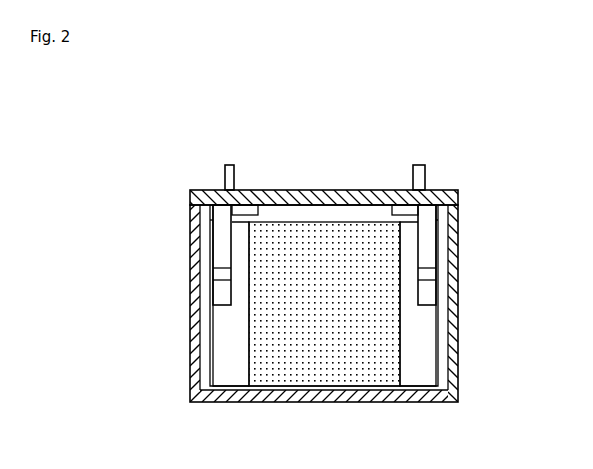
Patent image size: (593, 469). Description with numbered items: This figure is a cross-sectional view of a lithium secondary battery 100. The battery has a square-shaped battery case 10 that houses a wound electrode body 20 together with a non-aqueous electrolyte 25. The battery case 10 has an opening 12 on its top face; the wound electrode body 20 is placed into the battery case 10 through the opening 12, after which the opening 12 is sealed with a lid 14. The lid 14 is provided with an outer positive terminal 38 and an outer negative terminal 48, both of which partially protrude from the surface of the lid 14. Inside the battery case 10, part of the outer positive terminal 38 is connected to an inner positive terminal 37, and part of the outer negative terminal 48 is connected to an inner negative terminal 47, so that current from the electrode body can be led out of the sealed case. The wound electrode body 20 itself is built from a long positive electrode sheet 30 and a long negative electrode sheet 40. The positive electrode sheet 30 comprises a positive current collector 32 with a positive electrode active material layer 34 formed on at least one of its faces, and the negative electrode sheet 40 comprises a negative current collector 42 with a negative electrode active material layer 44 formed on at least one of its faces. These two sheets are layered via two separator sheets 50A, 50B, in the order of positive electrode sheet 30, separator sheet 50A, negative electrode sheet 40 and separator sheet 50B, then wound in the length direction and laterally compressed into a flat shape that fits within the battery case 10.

The lithium secondary battery 100 is at (522, 112).
The battery case 10 is at (457, 218).
The opening 12 is at (308, 218).
The lid 14 is at (457, 194).
The wound electrode body 20 is at (339, 220).
The non-aqueous electrolyte 25 is at (370, 323).
The positive electrode sheet 30 is at (230, 410).
The positive current collector 32 is at (228, 378).
The positive electrode active material layer 34 is at (288, 365).
The inner positive terminal 37 is at (221, 250).
The outer positive terminal 38 is at (229, 167).
The negative electrode sheet 40 is at (414, 410).
The negative current collector 42 is at (416, 380).
The negative electrode active material layer 44 is at (380, 362).
The inner negative terminal 47 is at (427, 252).
The outer negative terminal 48 is at (420, 168).
The separator sheet 50A is at (340, 374).
The separator sheet 50B is at (333, 412).